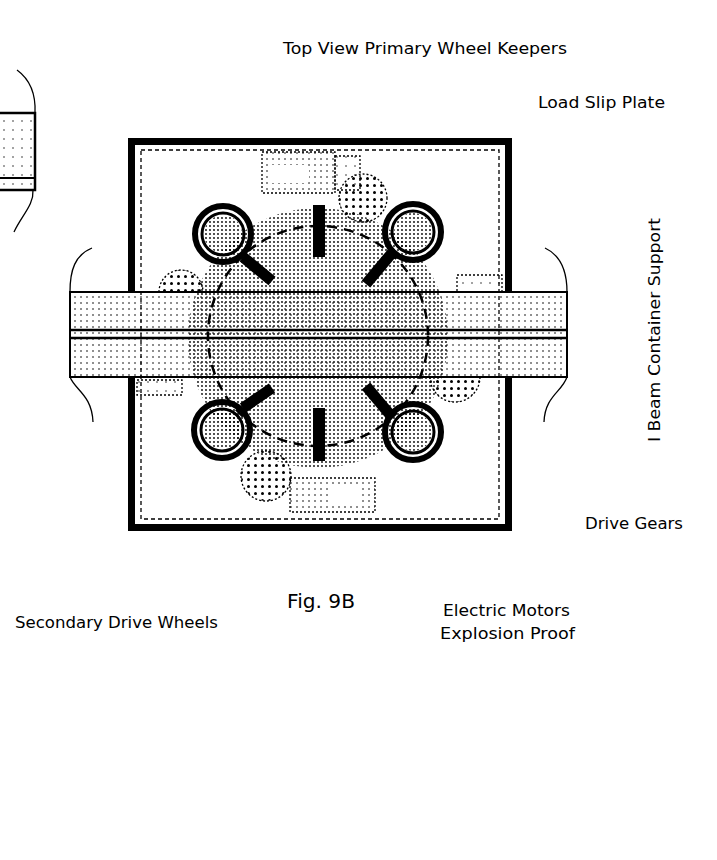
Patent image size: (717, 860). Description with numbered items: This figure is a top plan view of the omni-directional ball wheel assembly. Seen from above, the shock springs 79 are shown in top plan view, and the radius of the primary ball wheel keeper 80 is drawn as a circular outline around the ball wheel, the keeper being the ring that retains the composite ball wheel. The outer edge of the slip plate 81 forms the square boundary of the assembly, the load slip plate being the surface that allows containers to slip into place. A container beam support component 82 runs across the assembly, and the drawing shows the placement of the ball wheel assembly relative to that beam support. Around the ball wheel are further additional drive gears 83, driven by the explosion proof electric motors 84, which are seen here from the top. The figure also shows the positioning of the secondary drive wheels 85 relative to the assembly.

The shock springs 79 is at (227, 253).
The primary ball wheel keeper 80 is at (375, 235).
The slip plate 81 is at (507, 139).
The container beam support component 82 is at (520, 357).
The additional drive gears 83 is at (467, 400).
The explosion proof electric motors 84 is at (360, 497).
The secondary drive wheels 85 is at (320, 465).